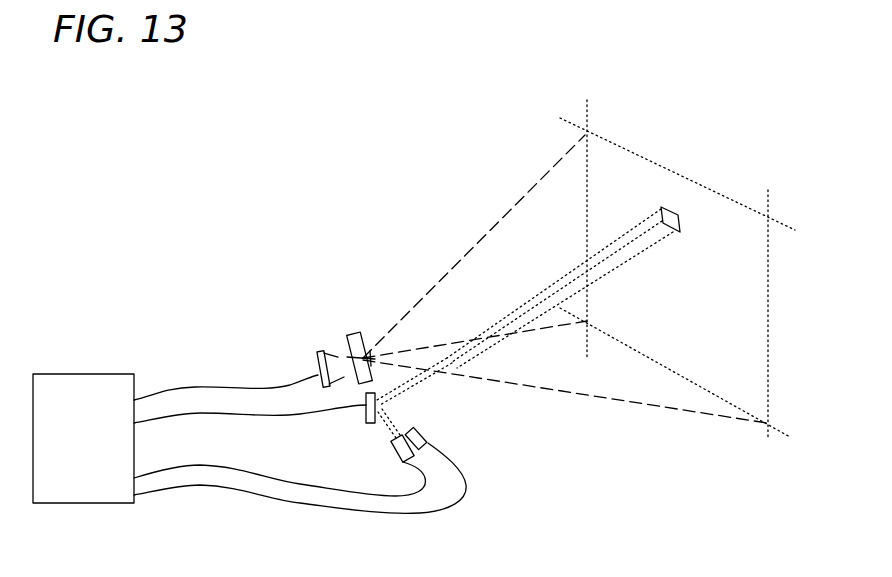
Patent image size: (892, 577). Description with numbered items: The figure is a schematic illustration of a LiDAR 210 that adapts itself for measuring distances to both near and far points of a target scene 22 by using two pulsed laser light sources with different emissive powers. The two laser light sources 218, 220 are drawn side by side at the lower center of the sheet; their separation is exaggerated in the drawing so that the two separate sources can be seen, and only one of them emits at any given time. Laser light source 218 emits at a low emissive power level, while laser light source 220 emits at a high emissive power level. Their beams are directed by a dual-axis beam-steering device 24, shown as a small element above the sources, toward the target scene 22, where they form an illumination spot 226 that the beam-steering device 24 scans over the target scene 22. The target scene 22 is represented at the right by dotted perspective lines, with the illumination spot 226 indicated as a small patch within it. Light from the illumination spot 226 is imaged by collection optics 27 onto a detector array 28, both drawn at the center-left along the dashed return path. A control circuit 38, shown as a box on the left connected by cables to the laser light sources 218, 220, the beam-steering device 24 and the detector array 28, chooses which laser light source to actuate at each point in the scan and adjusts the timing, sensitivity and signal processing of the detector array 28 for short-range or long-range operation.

The LiDAR 210 is at (117, 172).
The control circuit 38 is at (99, 453).
The detector array 28 is at (320, 351).
The collection optics 27 is at (352, 333).
The target scene 22 is at (753, 348).
The illumination spot 226 is at (673, 206).
The dual-axis beam-steering device 24 is at (368, 419).
The laser light source 218 is at (393, 457).
The laser light source 220 is at (428, 434).